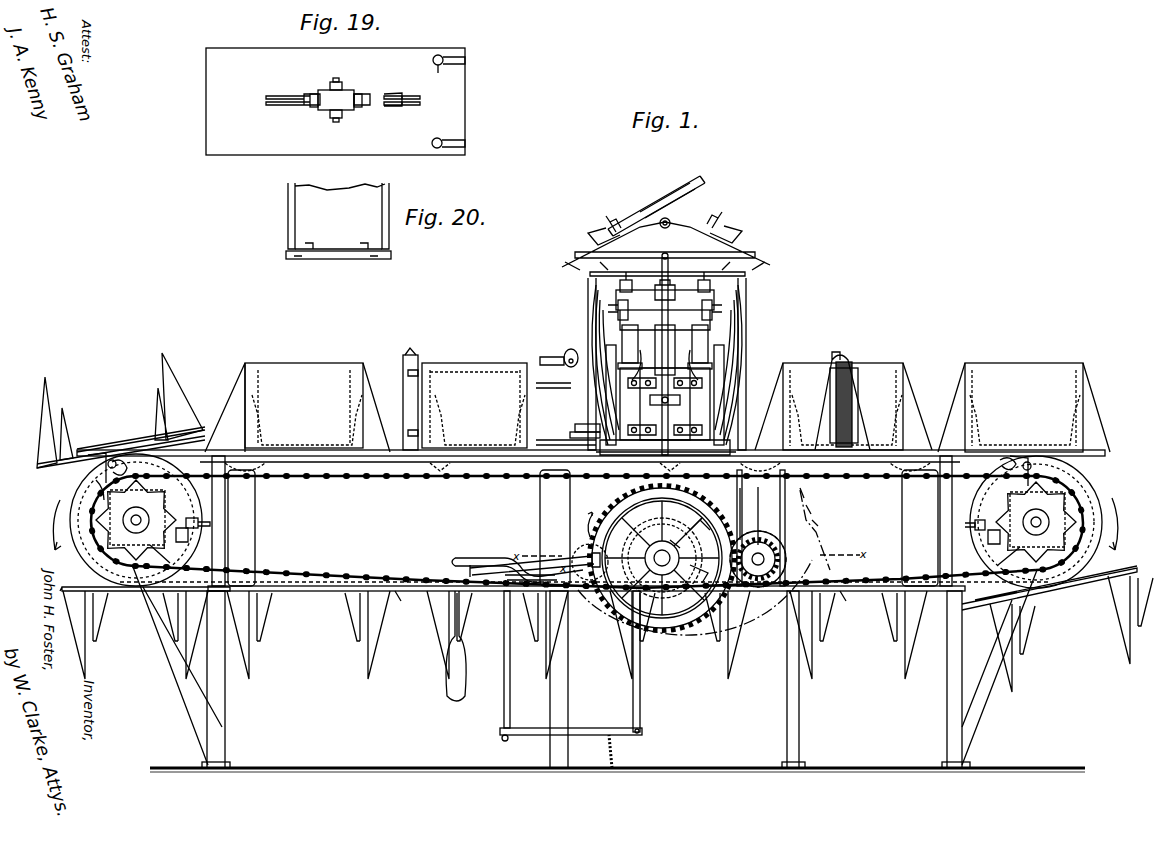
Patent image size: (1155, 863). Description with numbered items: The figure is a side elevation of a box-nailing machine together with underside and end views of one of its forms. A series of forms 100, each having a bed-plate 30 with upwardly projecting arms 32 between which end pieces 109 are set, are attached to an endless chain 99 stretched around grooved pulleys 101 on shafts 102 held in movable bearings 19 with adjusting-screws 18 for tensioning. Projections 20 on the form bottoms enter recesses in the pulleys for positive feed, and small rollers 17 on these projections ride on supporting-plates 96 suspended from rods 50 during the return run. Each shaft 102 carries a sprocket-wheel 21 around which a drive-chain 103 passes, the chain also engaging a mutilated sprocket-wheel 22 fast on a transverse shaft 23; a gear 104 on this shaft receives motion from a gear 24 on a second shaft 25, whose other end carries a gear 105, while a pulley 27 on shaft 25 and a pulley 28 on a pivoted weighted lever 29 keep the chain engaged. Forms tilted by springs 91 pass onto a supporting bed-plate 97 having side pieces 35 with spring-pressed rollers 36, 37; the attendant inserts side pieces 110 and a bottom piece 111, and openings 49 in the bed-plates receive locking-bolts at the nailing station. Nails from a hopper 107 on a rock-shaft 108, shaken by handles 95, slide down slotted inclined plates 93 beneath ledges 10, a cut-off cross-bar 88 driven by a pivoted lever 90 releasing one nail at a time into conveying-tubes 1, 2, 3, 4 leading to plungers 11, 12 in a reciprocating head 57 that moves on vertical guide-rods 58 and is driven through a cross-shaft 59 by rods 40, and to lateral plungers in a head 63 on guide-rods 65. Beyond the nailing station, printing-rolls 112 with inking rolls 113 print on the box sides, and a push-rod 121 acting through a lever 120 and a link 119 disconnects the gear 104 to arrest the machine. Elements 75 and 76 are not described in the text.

In FIG. 1, the series of conveying-tubes 1 is at (604, 282).
In FIG. 1, the series of conveying-tubes 2 is at (731, 282).
In FIG. 1, the series of conveying-tubes 3 is at (598, 365).
In FIG. 1, the series of conveying-tubes 4 is at (735, 365).
In FIG. 1, the ledge 10 is at (665, 217).
In FIG. 1, the series of plungers 11 is at (612, 312).
In FIG. 1, the series of plungers 12 is at (722, 312).
In FIG. 19, the small rollers 17 is at (325, 124).
In FIG. 1, the adjusting-screws 18 is at (969, 512).
In FIG. 1, the bearings 19 is at (993, 548).
In FIG. 19, the projections 20 is at (345, 97).
In FIG. 1, the projections 20 is at (1095, 580).
In FIG. 1, the sprocket-wheel 21 is at (1024, 490).
In FIG. 1, the mutilated sprocket-wheel 22 is at (680, 590).
In FIG. 1, the transverse shaft 23 is at (690, 530).
In FIG. 1, the gear 24 is at (754, 567).
In FIG. 1, the second transverse shaft 25 is at (758, 559).
In FIG. 1, the pulley 27 is at (762, 520).
In FIG. 1, the pulley 28 is at (580, 548).
In FIG. 1, the pivoted weighted lever 29 is at (490, 560).
In FIG. 19, the bed-plate 30 is at (335, 101).
In FIG. 20, the bed-plate 30 is at (344, 259).
In FIG. 20, the arms 32 is at (338, 216).
In FIG. 1, the side pieces 35 is at (442, 398).
In FIG. 1, the spring-pressed roller 36 is at (578, 425).
In FIG. 1, the spring-pressed roller 37 is at (562, 353).
In FIG. 1, the rods 40 is at (668, 350).
In FIG. 19, the openings 49 is at (447, 101).
In FIG. 1, the rods 50 is at (250, 528).
In FIG. 1, the reciprocating head 57 is at (665, 310).
In FIG. 1, the vertical guide-rods 58 is at (666, 282).
In FIG. 1, the cross-shaft 59 is at (674, 286).
In FIG. 1, the laterally-reciprocating head 63 is at (667, 403).
In FIG. 1, the guide-rods 65 is at (665, 396).
In FIG. 1, the cylinder 75 is at (626, 347).
In FIG. 1, the cylinder 76 is at (705, 347).
In FIG. 1, the cross-bar 88 is at (666, 249).
In FIG. 1, the pivoted lever 90 is at (675, 338).
In FIG. 1, the springs 91 is at (80, 470).
In FIG. 1, the inclined plates 93 is at (743, 232).
In FIG. 1, the handles 95 is at (639, 211).
In FIG. 1, the supporting-plates 96 is at (967, 602).
In FIG. 1, the supporting bed-plate 97 is at (928, 456).
In FIG. 19, the endless chain 99 is at (286, 94).
In FIG. 1, the endless chain 99 is at (990, 470).
In FIG. 1, the forms 100 is at (595, 522).
In FIG. 1, the grooved wheels or pulleys 101 is at (1110, 501).
In FIG. 1, the shafts 102 is at (1054, 513).
In FIG. 1, the drive-chain 103 is at (257, 565).
In FIG. 1, the gear 104 is at (694, 640).
In FIG. 1, the gear 105 is at (818, 520).
In FIG. 1, the hopper 107 is at (700, 190).
In FIG. 1, the rock-shaft 108 is at (670, 223).
In FIG. 1, the end pieces 109 is at (666, 410).
In FIG. 1, the side pieces 110 is at (1025, 365).
In FIG. 1, the bottom piece 111 is at (474, 364).
In FIG. 1, the printing-rolls 112 is at (860, 366).
In FIG. 1, the inking rolls 113 is at (830, 368).
In FIG. 1, the link 119 is at (646, 692).
In FIG. 1, the lever 120 is at (588, 736).
In FIG. 1, the push-rod 121 is at (508, 686).